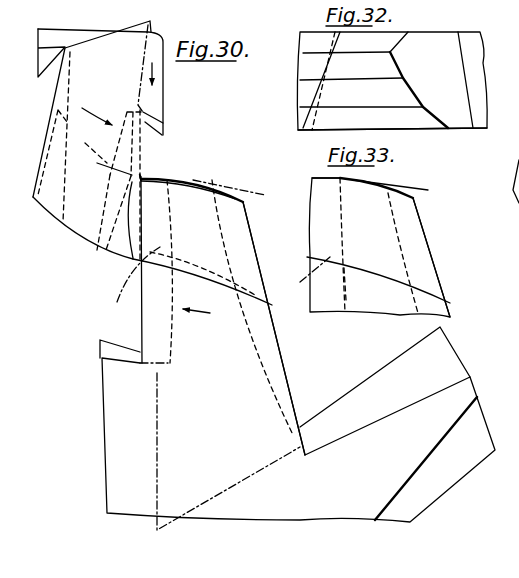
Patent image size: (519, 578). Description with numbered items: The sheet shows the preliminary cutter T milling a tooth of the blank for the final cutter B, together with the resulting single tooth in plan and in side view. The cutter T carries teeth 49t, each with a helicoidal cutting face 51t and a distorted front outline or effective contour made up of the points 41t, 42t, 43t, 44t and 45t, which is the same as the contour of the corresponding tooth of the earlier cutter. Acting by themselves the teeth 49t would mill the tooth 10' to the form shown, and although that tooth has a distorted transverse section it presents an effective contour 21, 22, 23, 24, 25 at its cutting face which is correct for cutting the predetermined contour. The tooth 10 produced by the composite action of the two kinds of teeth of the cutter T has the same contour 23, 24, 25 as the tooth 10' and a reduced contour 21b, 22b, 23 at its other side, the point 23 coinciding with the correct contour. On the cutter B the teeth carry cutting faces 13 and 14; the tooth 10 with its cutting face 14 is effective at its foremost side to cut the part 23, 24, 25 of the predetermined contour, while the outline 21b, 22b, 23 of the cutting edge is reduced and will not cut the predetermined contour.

In FIG. 30, the cutter T is at (100, 121).
In FIG. 30, the cutter B is at (297, 355).
In FIG. 32, the cutter B is at (460, 30).
In FIG. 33, the cutter B is at (379, 247).
In FIG. 32, the tooth 10 is at (410, 70).
In FIG. 33, the tooth 10 is at (418, 257).
In FIG. 30, the tooth 10' is at (254, 310).
In FIG. 32, the cutting face 13 is at (332, 43).
In FIG. 30, the cutting face 14 is at (127, 278).
In FIG. 33, the cutting face 14 is at (305, 274).
In FIG. 30, the contour point 21 is at (178, 258).
In FIG. 32, the reduced contour point 21b is at (338, 33).
In FIG. 33, the reduced contour point 21b is at (348, 267).
In FIG. 30, the contour point 22 is at (170, 182).
In FIG. 32, the reduced contour point 22b is at (340, 53).
In FIG. 33, the reduced contour point 22b is at (341, 181).
In FIG. 30, the contour point 23 is at (157, 177).
In FIG. 32, the contour point 23 is at (323, 79).
In FIG. 33, the contour point 23 is at (340, 178).
In FIG. 30, the contour point 24 is at (141, 178).
In FIG. 32, the contour point 24 is at (303, 107).
In FIG. 33, the contour point 24 is at (313, 178).
In FIG. 30, the contour point 25 is at (130, 262).
In FIG. 32, the contour point 25 is at (300, 125).
In FIG. 33, the contour point 25 is at (307, 257).
In FIG. 30, the contour point 41t is at (97, 242).
In FIG. 30, the contour point 42t is at (117, 170).
In FIG. 30, the contour point 43t is at (123, 173).
In FIG. 30, the contour point 44t is at (132, 182).
In FIG. 30, the contour point 45t is at (132, 260).
In FIG. 30, the tooth 49t is at (72, 225).
In FIG. 30, the helicoidal cutting face 51t is at (102, 207).